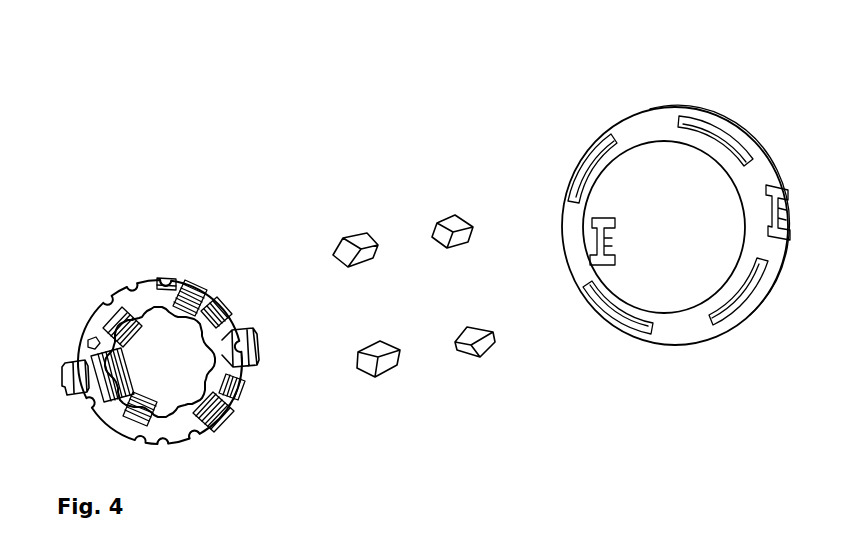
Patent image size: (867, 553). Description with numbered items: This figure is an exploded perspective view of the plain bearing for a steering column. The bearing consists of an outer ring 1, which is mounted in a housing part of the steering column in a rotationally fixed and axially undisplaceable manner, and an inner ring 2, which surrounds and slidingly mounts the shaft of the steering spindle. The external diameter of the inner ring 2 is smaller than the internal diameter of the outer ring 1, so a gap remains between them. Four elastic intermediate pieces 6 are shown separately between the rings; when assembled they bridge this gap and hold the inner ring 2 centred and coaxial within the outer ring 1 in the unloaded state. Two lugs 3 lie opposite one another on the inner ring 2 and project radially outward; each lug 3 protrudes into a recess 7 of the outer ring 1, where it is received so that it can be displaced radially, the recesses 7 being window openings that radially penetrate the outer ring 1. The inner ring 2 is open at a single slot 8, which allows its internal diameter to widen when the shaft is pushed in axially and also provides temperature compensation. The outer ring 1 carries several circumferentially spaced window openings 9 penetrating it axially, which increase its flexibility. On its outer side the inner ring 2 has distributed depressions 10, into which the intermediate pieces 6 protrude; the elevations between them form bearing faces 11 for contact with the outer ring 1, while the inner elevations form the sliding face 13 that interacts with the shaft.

The outer ring 1 is at (625, 128).
The inner ring 2 is at (153, 447).
The lugs 3 is at (73, 380).
The elastic intermediate pieces 6 is at (455, 220).
The recesses 7 is at (605, 223).
The slot 8 is at (93, 343).
The window openings 9 is at (607, 318).
The depressions 10 is at (138, 278).
The bearing faces 11 is at (168, 279).
The sliding face 13 is at (107, 382).